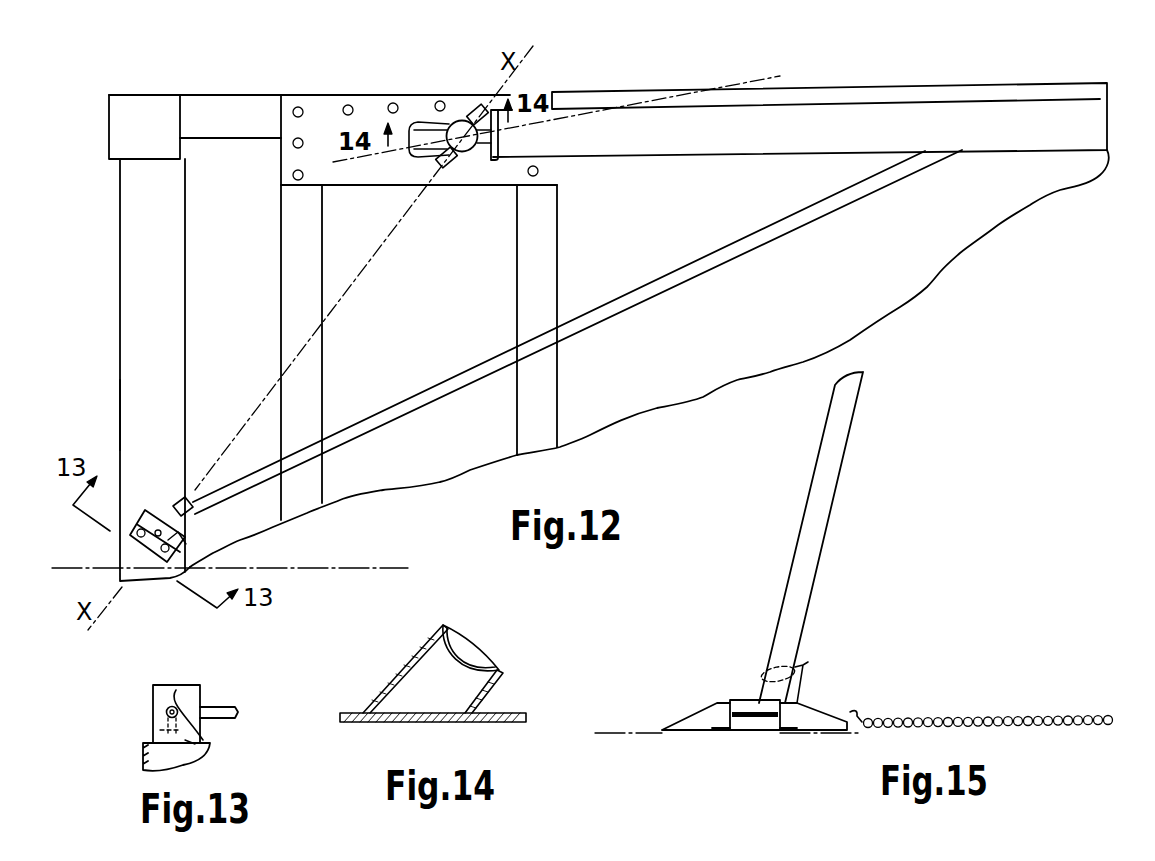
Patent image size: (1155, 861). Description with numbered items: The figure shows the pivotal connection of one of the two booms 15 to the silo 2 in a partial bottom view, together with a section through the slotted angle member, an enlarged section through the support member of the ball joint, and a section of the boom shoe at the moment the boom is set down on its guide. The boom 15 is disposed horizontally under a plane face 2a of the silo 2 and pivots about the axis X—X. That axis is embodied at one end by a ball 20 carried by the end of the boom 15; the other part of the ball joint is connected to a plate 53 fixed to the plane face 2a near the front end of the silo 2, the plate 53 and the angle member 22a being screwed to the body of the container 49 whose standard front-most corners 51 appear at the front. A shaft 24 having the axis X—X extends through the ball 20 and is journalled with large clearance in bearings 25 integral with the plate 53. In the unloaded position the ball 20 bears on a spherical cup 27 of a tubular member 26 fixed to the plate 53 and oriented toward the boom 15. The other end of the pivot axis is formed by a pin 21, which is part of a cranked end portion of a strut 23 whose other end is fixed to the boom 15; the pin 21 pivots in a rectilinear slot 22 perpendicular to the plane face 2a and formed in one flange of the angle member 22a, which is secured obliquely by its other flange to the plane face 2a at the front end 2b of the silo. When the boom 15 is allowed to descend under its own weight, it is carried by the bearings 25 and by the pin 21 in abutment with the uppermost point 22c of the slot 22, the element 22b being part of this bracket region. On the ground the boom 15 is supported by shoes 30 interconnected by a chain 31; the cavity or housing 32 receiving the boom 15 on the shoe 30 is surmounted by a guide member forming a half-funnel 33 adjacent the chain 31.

In FIG. 12, the silo 2 is at (185, 226).
In FIG. 12, the plane face 2a is at (296, 290).
In FIG. 12, the front end 2b is at (130, 376).
In FIG. 13, the front end 2b is at (200, 752).
In FIG. 12, the boom 15 is at (1036, 112).
In FIG. 15, the boom 15 is at (808, 545).
In FIG. 12, the ball 20 is at (462, 132).
In FIG. 12, the pin 21 is at (186, 490).
In FIG. 13, the pin 21 is at (168, 714).
In FIG. 12, the rectilinear slot 22 is at (190, 546).
In FIG. 13, the rectilinear slot 22 is at (200, 722).
In FIG. 12, the angle member 22a is at (145, 510).
In FIG. 13, the angle member 22a is at (170, 686).
In FIG. 13, the bracket hook 22b is at (184, 693).
In FIG. 13, the uppermost point of the slot 22c is at (168, 730).
In FIG. 12, the strut 23 is at (723, 268).
In FIG. 13, the strut 23 is at (230, 716).
In FIG. 12, the shaft 24 is at (480, 160).
In FIG. 12, the bearings 25 is at (474, 107).
In FIG. 12, the tubular member 26 is at (430, 126).
In FIG. 14, the tubular member 26 is at (405, 668).
In FIG. 14, the spherical cup 27 is at (470, 657).
In FIG. 15, the shoe 30 is at (700, 722).
In FIG. 15, the chain 31 is at (1079, 726).
In FIG. 15, the cavity or housing 32 is at (755, 707).
In FIG. 15, the half-funnel 33 is at (803, 670).
In FIG. 12, the container body 49 is at (226, 158).
In FIG. 12, the front-most corners 51 is at (138, 106).
In FIG. 12, the plate 53 is at (315, 108).
In FIG. 14, the plate 53 is at (503, 713).